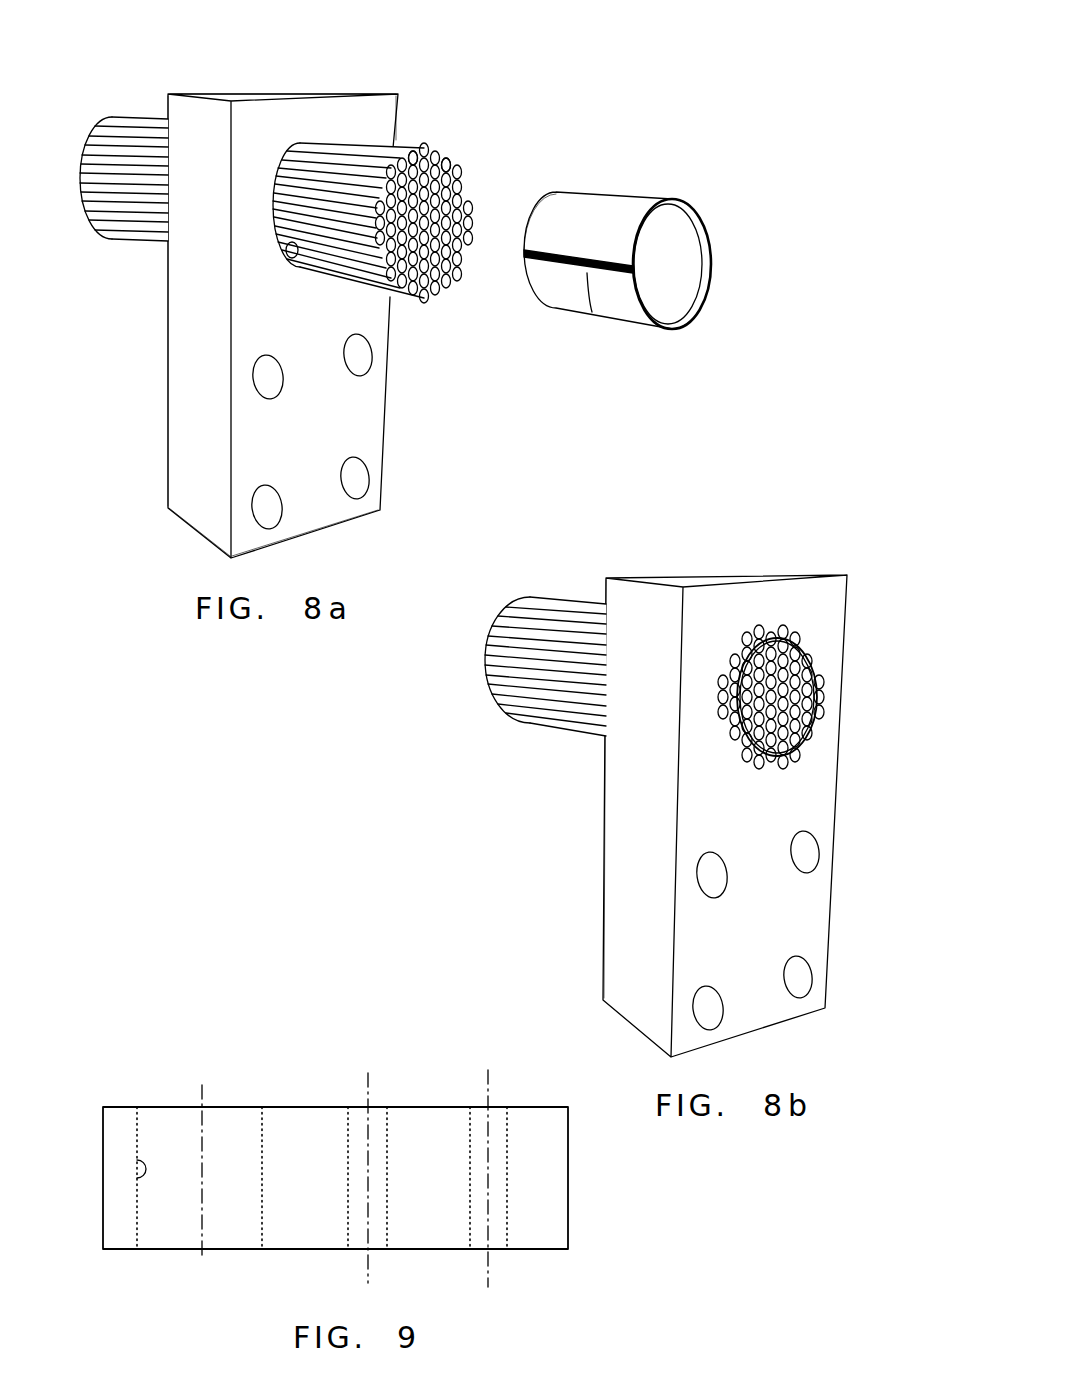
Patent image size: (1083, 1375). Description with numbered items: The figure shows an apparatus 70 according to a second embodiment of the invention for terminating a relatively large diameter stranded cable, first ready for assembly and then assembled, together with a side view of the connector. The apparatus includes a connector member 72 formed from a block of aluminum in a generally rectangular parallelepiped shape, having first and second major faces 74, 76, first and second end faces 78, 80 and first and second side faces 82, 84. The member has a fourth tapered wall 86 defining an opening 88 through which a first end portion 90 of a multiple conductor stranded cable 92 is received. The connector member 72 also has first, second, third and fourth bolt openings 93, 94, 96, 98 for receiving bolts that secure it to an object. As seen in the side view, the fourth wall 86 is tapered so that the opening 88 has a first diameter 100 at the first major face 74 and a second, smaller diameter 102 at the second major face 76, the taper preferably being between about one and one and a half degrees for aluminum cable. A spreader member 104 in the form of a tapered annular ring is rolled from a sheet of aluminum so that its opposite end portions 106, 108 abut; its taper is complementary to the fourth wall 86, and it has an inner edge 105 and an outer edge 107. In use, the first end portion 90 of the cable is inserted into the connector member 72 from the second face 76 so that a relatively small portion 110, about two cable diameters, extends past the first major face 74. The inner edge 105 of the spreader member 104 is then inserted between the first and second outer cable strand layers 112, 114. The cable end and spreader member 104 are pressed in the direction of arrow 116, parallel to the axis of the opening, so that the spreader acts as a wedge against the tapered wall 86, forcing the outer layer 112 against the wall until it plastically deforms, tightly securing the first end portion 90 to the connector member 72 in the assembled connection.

In FIG. 8A, the apparatus 70 is at (559, 87).
In FIG. 8B, the apparatus 70 is at (572, 809).
In FIG. 8A, the connector member 72 is at (176, 343).
In FIG. 8A, the first major face 74 is at (373, 420).
In FIG. 8B, the first major face 74 is at (805, 785).
In FIG. 9, the first major face 74 is at (425, 1107).
In FIG. 8A, the second major face 76 is at (168, 406).
In FIG. 8B, the second major face 76 is at (603, 893).
In FIG. 9, the second major face 76 is at (427, 1250).
In FIG. 8A, the first end face 78 is at (282, 95).
In FIG. 8A, the second end face 80 is at (332, 530).
In FIG. 8A, the first side face 82 is at (187, 493).
In FIG. 8A, the second side face 84 is at (398, 118).
In FIG. 8A, the fourth tapered wall 86 is at (294, 254).
In FIG. 8B, the fourth tapered wall 86 is at (728, 745).
In FIG. 9, the fourth tapered wall 86 is at (137, 1178).
In FIG. 8A, the opening 88 is at (317, 142).
In FIG. 9, the opening 88 is at (246, 1132).
In FIG. 8A, the first end portion 90 is at (417, 286).
In FIG. 8B, the first end portion 90 is at (813, 698).
In FIG. 8A, the multiple conductor stranded cable 92 is at (117, 237).
In FIG. 8B, the multiple conductor stranded cable 92 is at (550, 597).
In FIG. 8A, the first bolt opening 93 is at (265, 400).
In FIG. 8A, the second bolt opening 94 is at (366, 362).
In FIG. 8A, the third bolt opening 96 is at (253, 506).
In FIG. 8A, the fourth bolt opening 98 is at (367, 480).
In FIG. 9, the first diameter 100 is at (252, 1071).
In FIG. 9, the second diameter 102 is at (252, 1294).
In FIG. 8A, the spreader member 104 is at (685, 272).
In FIG. 8B, the spreader member 104 is at (816, 638).
In FIG. 8A, the inner edge 105 is at (537, 211).
In FIG. 8A, the opposite end portion 106 is at (633, 197).
In FIG. 8A, the outer edge 107 is at (711, 249).
In FIG. 8A, the opposite end portion 108 is at (592, 312).
In FIG. 8A, the relatively small portion 110 is at (387, 286).
In FIG. 8A, the first outer cable strand layer 112 is at (452, 158).
In FIG. 8A, the second outer cable strand layer 114 is at (418, 168).
In FIG. 8A, the arrow 116 is at (618, 187).